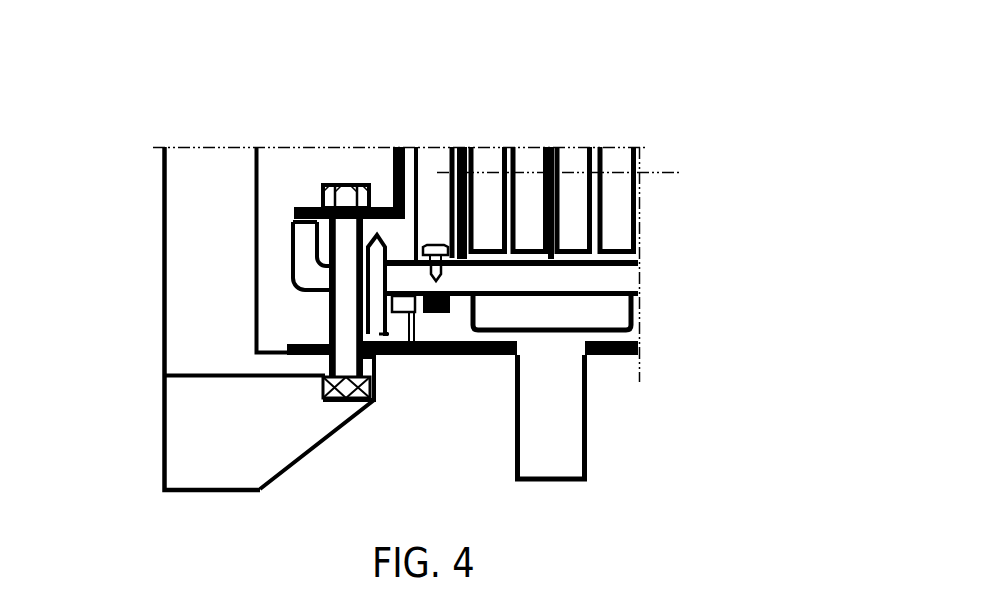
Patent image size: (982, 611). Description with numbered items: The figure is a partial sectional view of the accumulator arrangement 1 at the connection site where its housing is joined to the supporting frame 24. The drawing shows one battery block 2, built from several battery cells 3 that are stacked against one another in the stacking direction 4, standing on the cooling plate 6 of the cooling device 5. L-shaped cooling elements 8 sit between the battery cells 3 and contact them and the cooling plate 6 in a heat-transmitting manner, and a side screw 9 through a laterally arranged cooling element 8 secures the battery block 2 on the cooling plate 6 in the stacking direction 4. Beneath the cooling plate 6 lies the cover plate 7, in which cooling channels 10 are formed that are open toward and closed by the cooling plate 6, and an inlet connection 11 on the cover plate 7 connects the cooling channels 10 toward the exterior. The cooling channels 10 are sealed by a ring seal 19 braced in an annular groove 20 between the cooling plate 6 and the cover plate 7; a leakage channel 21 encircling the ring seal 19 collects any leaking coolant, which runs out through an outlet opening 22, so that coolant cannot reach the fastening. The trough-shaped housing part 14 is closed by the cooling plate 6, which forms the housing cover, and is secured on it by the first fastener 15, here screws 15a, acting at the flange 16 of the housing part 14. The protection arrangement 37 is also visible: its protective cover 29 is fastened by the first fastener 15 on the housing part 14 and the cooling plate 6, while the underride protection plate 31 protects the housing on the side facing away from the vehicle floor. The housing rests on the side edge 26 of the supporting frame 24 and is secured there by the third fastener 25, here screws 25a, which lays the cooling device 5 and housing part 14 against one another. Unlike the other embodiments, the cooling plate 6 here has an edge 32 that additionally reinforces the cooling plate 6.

The accumulator arrangement 1 is at (710, 154).
The battery block 2 is at (543, 145).
The battery cell 3 is at (487, 158).
The stacking direction 4 is at (660, 171).
The cooling device 5 is at (567, 283).
The cooling plate 6 is at (630, 278).
The cover plate 7 is at (633, 335).
The cooling element 8 is at (549, 157).
The side screw 9 is at (435, 247).
The cooling channel 10 is at (612, 312).
The inlet connection 11 is at (553, 480).
The housing part 14 is at (407, 150).
The first fastener 15 is at (228, 298).
The screw 15a is at (377, 280).
The flange 16 is at (375, 230).
The ring seal 19 is at (438, 314).
The annular groove 20 is at (449, 314).
The leakage channel 21 is at (400, 314).
The outlet opening 22 is at (415, 316).
The supporting frame 24 is at (158, 192).
The third fastener 25 is at (215, 281).
The screw 25a is at (347, 325).
The side edge 26 is at (298, 368).
The protective cover 29 is at (297, 207).
The underride protection plate 31 is at (616, 357).
The edge 32 is at (297, 242).
The protection arrangement 37 is at (478, 271).